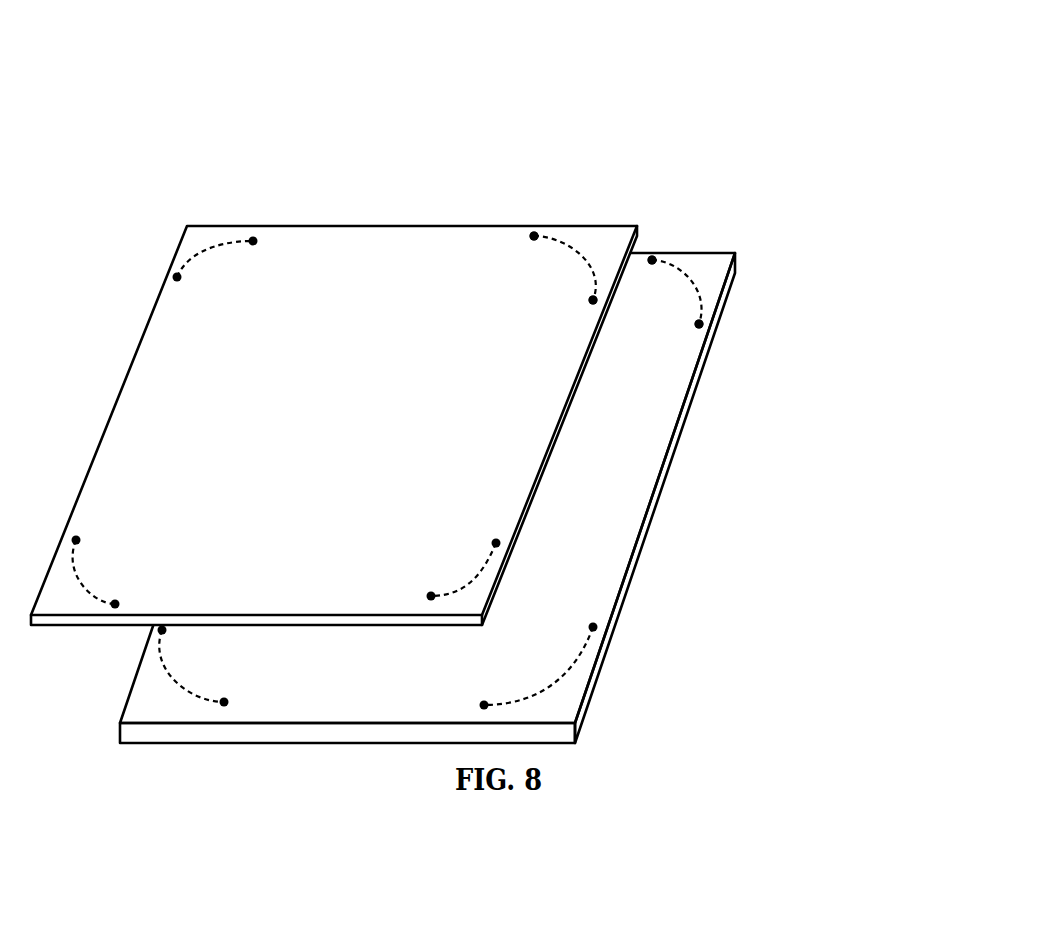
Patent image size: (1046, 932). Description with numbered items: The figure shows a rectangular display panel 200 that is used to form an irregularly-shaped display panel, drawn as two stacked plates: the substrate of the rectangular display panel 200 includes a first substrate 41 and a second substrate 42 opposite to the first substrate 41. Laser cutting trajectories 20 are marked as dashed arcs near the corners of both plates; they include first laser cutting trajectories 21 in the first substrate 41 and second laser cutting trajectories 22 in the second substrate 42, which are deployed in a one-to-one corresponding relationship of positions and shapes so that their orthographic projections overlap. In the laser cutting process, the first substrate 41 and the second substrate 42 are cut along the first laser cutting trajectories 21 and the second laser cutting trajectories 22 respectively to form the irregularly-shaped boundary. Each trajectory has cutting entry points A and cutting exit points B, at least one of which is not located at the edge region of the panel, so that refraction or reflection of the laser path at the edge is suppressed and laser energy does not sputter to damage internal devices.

The rectangular display panel 200 is at (732, 38).
The first substrate 41 is at (427, 498).
The second substrate 42 is at (334, 373).
The laser cutting trajectories 20 is at (800, 233).
The first laser cutting trajectories 21 is at (478, 465).
The second laser cutting trajectories 22 is at (435, 420).
The cutting entry points A is at (656, 377).
The cutting exit points B is at (573, 233).